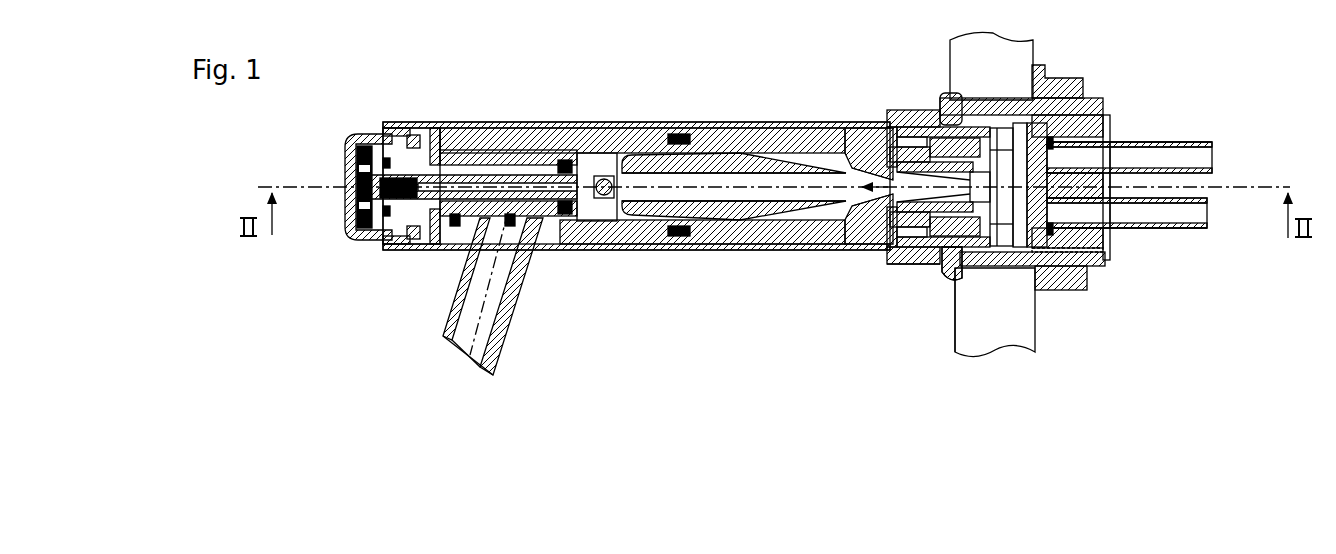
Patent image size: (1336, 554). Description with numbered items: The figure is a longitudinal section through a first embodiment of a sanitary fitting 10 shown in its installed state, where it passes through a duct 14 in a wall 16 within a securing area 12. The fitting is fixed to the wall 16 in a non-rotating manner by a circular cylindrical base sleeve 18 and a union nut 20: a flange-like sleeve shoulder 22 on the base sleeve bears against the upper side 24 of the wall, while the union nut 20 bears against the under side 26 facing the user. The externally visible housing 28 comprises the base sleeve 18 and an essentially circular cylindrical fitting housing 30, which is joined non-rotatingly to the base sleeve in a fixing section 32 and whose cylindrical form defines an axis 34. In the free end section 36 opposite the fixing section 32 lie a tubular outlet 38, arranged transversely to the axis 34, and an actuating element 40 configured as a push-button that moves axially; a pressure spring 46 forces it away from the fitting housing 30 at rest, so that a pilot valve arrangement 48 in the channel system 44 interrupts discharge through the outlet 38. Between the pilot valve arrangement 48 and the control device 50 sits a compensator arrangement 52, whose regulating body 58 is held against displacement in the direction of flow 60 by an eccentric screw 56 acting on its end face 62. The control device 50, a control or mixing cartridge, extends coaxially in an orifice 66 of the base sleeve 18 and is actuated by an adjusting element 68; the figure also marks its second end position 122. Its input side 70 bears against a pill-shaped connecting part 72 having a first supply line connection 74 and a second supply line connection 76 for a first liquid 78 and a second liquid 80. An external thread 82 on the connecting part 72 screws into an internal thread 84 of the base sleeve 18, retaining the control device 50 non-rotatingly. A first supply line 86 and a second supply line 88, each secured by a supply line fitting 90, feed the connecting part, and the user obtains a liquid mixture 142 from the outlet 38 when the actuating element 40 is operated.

The sanitary fitting 10 is at (497, 85).
The securing area 12 is at (935, 95).
The duct 14 is at (995, 270).
The wall 16 is at (1008, 333).
The base sleeve 18 is at (1103, 127).
The union nut 20 is at (1043, 68).
The sleeve shoulder 22 is at (950, 107).
The upper side 24 is at (950, 50).
The under side 26 is at (1033, 50).
The housing 28 is at (763, 118).
The fitting housing 30 is at (648, 122).
The fixing section 32 is at (885, 253).
The axis 34 is at (322, 186).
The free end section 36 is at (385, 118).
The outlet 38 is at (512, 323).
The actuating element 40 is at (353, 235).
The channel system 44 is at (595, 163).
The pressure spring 46 is at (399, 150).
The pilot valve arrangement 48 is at (510, 127).
The control device 50 is at (953, 277).
The compensator arrangement 52 is at (737, 152).
The eccentric screw 56 is at (603, 195).
The regulating body 58 is at (747, 212).
The direction of flow 60 is at (860, 253).
The end face 62 is at (612, 210).
The orifice 66 is at (1038, 290).
The adjusting element 68 is at (907, 262).
The input side 70 is at (1130, 128).
The connecting part 72 is at (1103, 257).
The first supply line connection 74 is at (1080, 212).
The second supply line connection 76 is at (1080, 153).
The first liquid 78 is at (1212, 213).
The second liquid 80 is at (1217, 157).
The external thread 82 is at (1088, 268).
The internal thread 84 is at (1103, 110).
The first supply line 86 is at (1207, 228).
The second supply line 88 is at (1213, 142).
The supply line fitting 90 is at (1103, 132).
The second end position 122 is at (953, 277).
The liquid mixture 142 is at (468, 368).